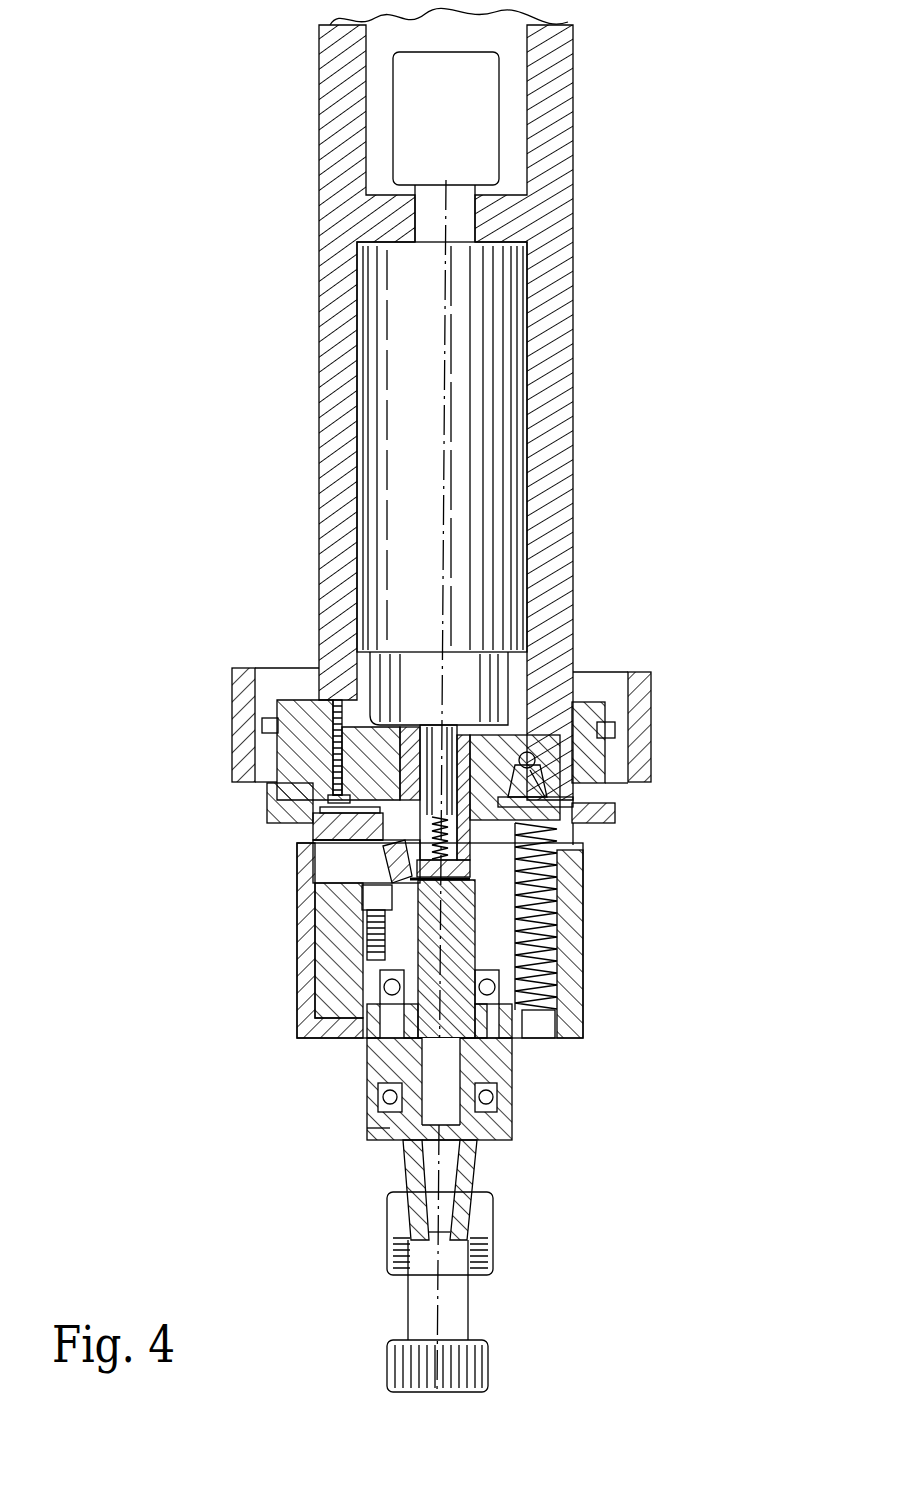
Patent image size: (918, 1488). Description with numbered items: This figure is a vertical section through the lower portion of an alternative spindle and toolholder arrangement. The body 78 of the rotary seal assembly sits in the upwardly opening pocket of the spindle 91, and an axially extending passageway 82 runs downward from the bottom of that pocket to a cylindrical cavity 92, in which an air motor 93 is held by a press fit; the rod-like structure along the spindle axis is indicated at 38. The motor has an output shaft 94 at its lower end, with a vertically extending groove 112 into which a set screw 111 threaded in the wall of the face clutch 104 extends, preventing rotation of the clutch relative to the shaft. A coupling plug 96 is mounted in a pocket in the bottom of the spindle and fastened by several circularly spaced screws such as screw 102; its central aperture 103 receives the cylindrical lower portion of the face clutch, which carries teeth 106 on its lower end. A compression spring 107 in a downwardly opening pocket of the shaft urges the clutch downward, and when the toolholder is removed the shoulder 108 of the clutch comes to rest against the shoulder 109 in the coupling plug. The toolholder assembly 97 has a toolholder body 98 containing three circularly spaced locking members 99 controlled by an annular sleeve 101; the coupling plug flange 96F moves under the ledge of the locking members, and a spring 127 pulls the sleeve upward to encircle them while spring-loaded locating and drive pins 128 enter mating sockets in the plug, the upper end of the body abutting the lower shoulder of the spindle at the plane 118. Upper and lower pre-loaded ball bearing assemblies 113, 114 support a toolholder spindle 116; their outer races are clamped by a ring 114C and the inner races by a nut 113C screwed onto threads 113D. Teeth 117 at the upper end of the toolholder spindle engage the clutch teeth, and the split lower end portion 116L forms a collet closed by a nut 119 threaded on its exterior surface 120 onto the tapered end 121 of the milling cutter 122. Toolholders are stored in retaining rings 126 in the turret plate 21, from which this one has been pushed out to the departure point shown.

The body of rotary seal assembly 78 is at (400, 150).
The axially extending passageway 82 is at (420, 224).
The spindle 91 is at (335, 365).
The air motor 93 is at (378, 433).
The rod 38 is at (440, 530).
The output shaft 94 is at (450, 730).
The cylindrical cavity 92 is at (360, 660).
The vertically extending groove 112 is at (470, 740).
The set screw 111 is at (510, 740).
The turret plate 21 is at (300, 705).
The face clutch 104 is at (340, 745).
The screw 102 is at (300, 760).
The shoulder of face clutch 108 is at (330, 785).
The shoulder in coupling plug 109 is at (535, 788).
The locating and drive pin 128 is at (548, 800).
The compression spring 107 is at (410, 828).
The central aperture 103 is at (615, 812).
The plane 118 is at (615, 815).
The retaining ring 126 is at (250, 824).
The toolholder assembly 97 is at (612, 832).
The locking member 99 is at (340, 850).
The coupling plug 96 is at (390, 870).
The teeth 117 is at (520, 870).
The annular sleeve 101 is at (575, 893).
The coupling plug flange 96F is at (380, 910).
The threads 113D is at (520, 930).
The teeth of face clutch 106 is at (375, 900).
The toolholder body 98 is at (355, 940).
The spring 127 is at (555, 977).
The nut 113C is at (340, 985).
The upper ball bearing assembly 113 is at (300, 1020).
The toolholder spindle 116 is at (470, 1070).
The lower ball bearing assembly 114 is at (365, 1105).
The lower end portion of toolholder spindle 116L is at (475, 1133).
The ring 114C is at (365, 1130).
The tapered end of milling cutter 121 is at (455, 1185).
The exterior surface of collet 120 is at (480, 1222).
The nut 119 is at (488, 1262).
The milling cutter 122 is at (492, 1366).